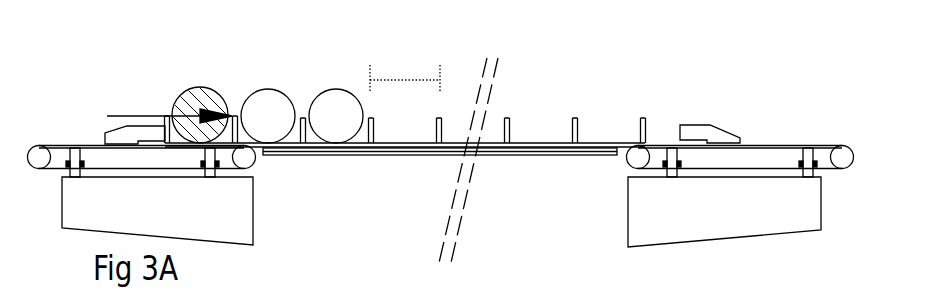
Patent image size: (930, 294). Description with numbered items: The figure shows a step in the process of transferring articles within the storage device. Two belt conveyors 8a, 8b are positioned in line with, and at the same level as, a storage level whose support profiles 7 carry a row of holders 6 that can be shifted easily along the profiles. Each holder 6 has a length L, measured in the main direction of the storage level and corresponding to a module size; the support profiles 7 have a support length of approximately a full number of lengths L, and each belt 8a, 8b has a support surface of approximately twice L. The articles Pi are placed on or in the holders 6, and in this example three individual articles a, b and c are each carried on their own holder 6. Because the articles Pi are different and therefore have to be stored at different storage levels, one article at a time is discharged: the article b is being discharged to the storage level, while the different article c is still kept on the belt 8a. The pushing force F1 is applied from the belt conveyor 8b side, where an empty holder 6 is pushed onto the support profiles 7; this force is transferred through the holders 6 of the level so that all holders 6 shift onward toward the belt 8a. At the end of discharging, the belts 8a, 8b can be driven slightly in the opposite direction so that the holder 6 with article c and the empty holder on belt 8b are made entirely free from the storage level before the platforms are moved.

The belt conveyor 8a is at (88, 152).
The belt conveyor 8b is at (767, 152).
The holder 6 is at (617, 147).
The support profile 7 is at (537, 154).
The article a is at (336, 116).
The article b is at (268, 116).
The article c is at (198, 121).
The articles Pi is at (335, 90).
The pushing force F1 is at (169, 104).
The length of a holder L is at (405, 71).